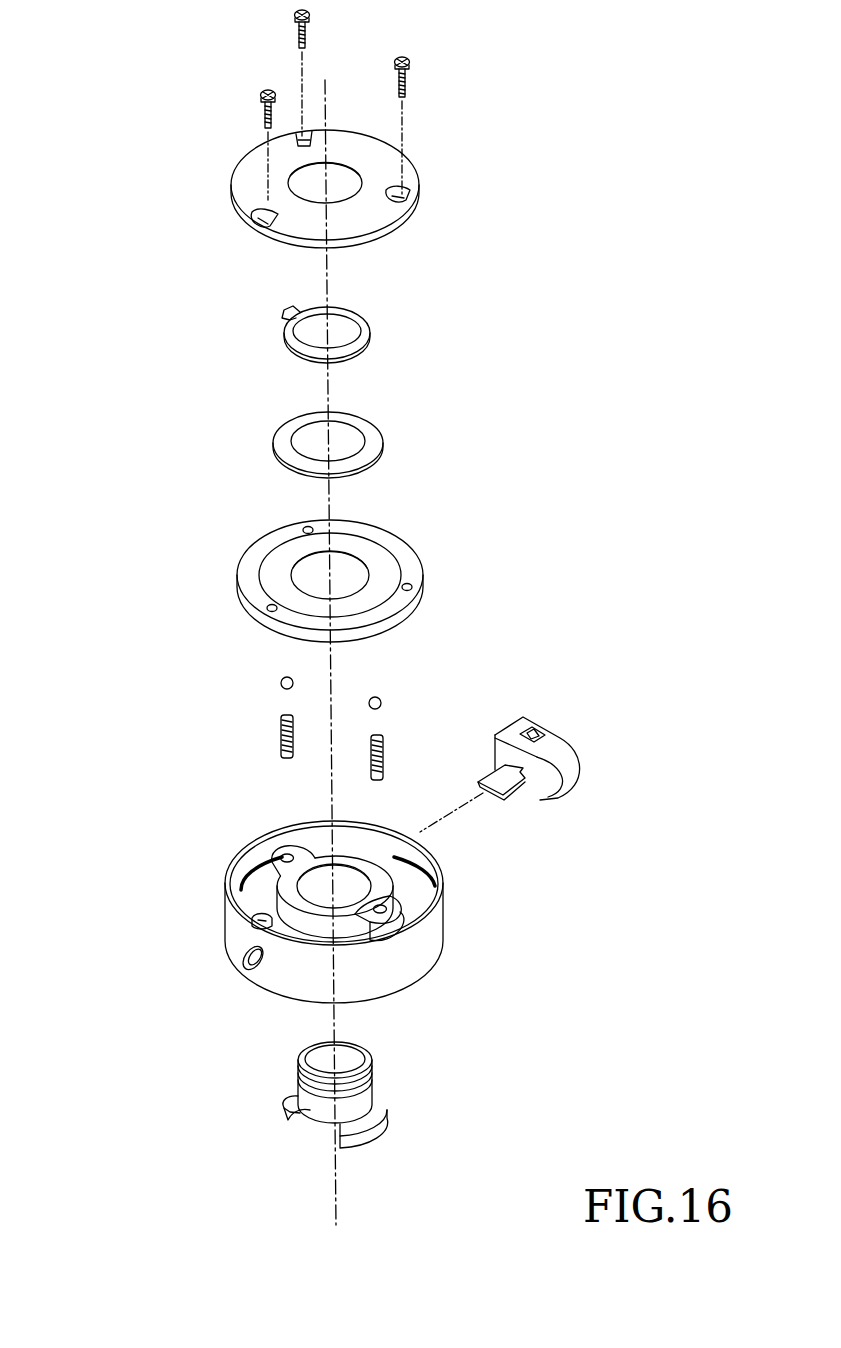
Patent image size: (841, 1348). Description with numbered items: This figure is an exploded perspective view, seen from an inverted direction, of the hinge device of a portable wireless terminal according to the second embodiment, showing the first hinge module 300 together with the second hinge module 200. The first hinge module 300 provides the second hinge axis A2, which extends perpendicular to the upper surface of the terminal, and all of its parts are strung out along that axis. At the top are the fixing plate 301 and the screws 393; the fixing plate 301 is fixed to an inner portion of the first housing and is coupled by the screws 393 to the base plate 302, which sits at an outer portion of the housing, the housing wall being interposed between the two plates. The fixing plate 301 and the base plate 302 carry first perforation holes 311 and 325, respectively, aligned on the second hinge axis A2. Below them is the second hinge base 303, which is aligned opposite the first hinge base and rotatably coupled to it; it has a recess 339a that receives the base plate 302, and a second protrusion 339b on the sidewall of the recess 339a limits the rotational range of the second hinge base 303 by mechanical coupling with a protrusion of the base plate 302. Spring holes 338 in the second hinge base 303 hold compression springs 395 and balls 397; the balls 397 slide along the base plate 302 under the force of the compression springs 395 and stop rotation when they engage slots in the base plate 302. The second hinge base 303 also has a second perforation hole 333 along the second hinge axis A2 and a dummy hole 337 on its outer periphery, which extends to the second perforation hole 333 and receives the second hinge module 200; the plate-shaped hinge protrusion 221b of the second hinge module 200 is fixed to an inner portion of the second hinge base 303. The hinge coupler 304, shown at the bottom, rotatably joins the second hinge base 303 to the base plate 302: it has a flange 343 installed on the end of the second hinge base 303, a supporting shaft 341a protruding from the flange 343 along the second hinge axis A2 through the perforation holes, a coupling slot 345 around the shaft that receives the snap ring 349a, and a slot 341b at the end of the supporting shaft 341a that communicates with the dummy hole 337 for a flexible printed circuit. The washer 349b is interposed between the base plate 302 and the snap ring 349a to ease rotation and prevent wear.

The first hinge module 300 is at (609, 397).
The screws 393 is at (407, 80).
The fixing plate 301 is at (361, 210).
The first perforation hole 311 is at (305, 198).
The snap ring 349a is at (365, 322).
The washer 349b is at (372, 434).
The base plate 302 is at (326, 574).
The first perforation hole 325 is at (305, 572).
The balls 397 is at (280, 683).
The compression springs 395 is at (280, 735).
The second hinge module 200 is at (534, 782).
The hinge protrusion 221b is at (512, 788).
The second hinge base 303 is at (304, 882).
The second perforation hole 333 is at (305, 835).
The spring holes 338 is at (281, 855).
The recess 339a is at (247, 890).
The second protrusion 339b is at (258, 918).
The dummy hole 337 is at (242, 966).
The hinge coupler 304 is at (338, 1117).
The supporting shaft 341a is at (375, 1090).
The flange 343 is at (385, 1128).
The slot 341b is at (312, 1122).
The coupling slot 345 is at (300, 1073).
The second hinge axis A2 is at (381, 1211).